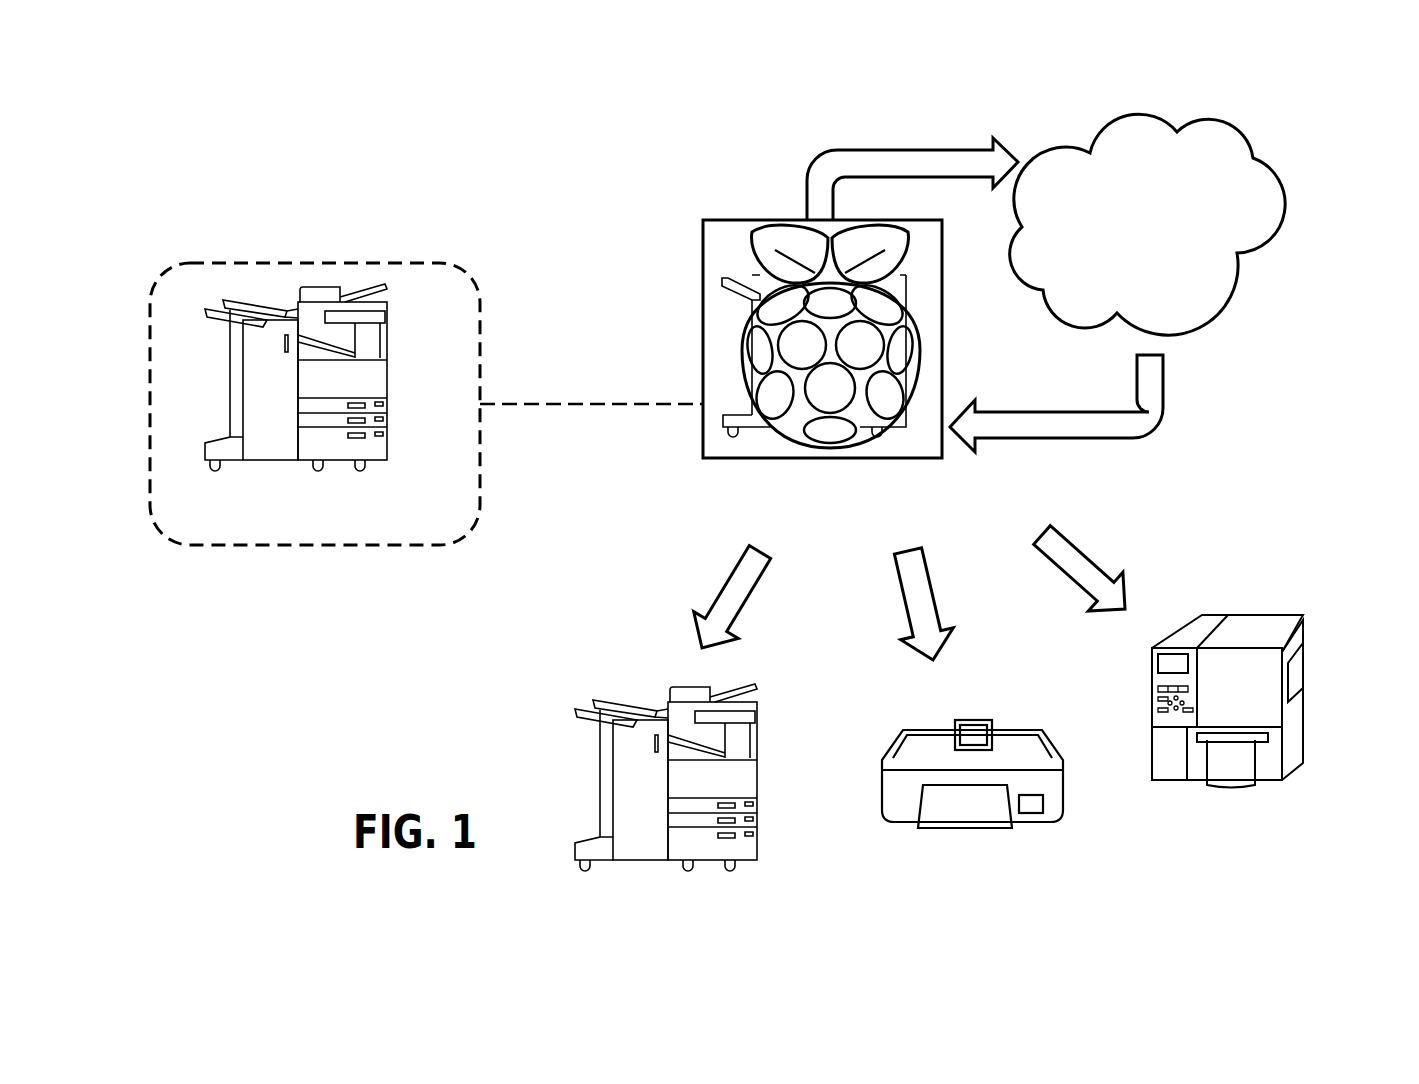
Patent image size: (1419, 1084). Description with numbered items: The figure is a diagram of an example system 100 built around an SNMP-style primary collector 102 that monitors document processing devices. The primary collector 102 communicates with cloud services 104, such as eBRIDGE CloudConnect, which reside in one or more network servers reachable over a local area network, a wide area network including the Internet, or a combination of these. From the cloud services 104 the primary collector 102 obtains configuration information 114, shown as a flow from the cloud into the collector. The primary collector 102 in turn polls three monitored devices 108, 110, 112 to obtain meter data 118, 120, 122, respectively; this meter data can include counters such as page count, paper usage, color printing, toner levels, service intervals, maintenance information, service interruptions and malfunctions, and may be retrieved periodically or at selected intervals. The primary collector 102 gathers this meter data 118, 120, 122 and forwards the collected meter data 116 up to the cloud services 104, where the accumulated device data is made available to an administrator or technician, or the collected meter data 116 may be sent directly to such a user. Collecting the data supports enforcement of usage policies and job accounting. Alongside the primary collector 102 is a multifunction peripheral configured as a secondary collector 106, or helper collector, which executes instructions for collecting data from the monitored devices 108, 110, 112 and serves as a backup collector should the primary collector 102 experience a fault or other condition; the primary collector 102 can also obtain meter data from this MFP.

The system 100 is at (490, 188).
The primary collector 102 is at (702, 436).
The cloud services 104 is at (1200, 321).
The secondary collector 106 is at (363, 546).
The monitored device 108 is at (655, 861).
The monitored device 110 is at (1020, 823).
The monitored device 112 is at (1290, 758).
The configuration information 114 is at (1143, 434).
The collected meter data 116 is at (810, 172).
The meter data 118 is at (745, 600).
The meter data 120 is at (933, 598).
The meter data 122 is at (1082, 549).